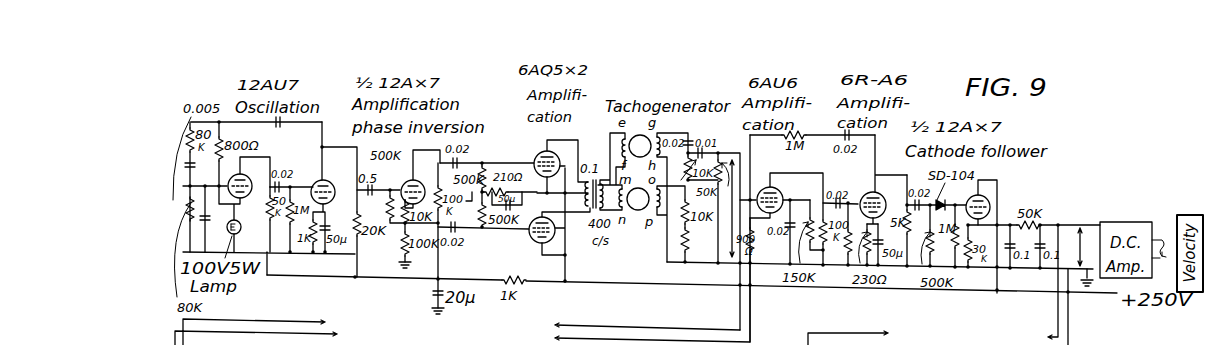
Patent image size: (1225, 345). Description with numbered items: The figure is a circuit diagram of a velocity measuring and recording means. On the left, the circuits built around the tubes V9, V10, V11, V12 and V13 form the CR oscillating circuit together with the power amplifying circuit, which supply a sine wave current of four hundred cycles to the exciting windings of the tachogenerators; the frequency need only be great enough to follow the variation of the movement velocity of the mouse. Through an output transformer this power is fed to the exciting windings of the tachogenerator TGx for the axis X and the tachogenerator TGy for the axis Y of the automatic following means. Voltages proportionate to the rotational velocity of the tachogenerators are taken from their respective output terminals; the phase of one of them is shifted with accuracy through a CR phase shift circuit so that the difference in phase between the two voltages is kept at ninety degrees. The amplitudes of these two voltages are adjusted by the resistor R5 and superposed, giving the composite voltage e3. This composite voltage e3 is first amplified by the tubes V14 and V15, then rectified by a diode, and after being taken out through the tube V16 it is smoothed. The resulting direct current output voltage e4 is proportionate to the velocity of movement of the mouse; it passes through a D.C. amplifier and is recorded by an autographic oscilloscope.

The vacuum tube V9 is at (244, 204).
The vacuum tube V10 is at (331, 207).
The vacuum tube V11 is at (421, 179).
The vacuum tube V12 is at (550, 165).
The vacuum tube V13 is at (551, 235).
The amplifying tube V14 is at (786, 196).
The amplifying tube V15 is at (878, 179).
The output tube V16 is at (990, 198).
The tachogenerator for axis X TGx is at (640, 146).
The tachogenerator for axis Y TGy is at (638, 199).
The amplitude adjusting resistor R5 is at (695, 245).
The composite voltage e3 is at (730, 208).
The direct current output voltage e4 is at (1078, 247).